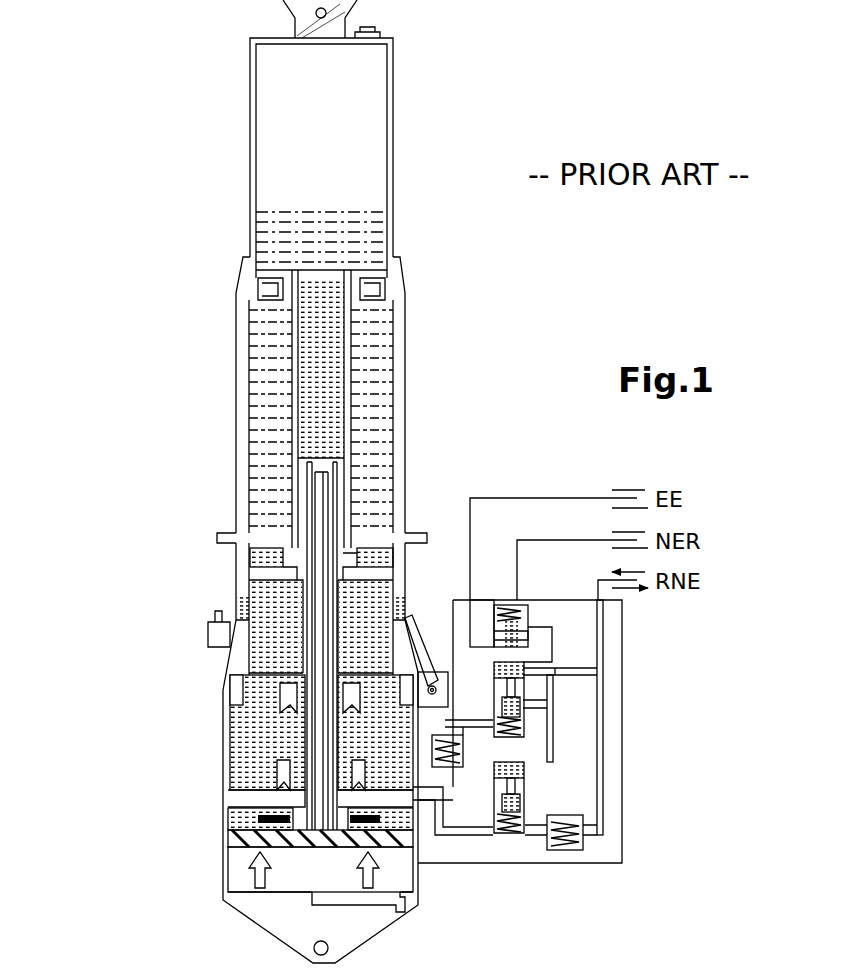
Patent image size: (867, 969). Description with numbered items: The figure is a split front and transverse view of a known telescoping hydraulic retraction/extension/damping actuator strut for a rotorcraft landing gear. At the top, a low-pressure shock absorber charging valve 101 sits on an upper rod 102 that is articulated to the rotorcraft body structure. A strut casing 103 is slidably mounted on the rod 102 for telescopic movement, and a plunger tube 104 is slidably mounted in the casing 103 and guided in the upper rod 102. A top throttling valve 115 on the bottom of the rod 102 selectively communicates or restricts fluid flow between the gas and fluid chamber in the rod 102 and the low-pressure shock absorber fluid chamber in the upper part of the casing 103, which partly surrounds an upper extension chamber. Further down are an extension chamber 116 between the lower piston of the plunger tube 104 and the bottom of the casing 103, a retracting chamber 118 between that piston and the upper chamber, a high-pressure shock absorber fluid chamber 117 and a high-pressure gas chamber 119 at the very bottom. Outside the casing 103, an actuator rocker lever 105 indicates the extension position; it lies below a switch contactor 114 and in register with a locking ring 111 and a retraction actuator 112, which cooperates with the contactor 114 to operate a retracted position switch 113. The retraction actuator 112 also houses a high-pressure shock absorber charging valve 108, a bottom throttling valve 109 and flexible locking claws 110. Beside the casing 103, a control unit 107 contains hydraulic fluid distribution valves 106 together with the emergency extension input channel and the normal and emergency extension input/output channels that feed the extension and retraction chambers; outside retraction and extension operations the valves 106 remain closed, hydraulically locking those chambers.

The low-pressure shock absorber charging valve 101 is at (367, 31).
The upper rod 102 is at (395, 133).
The strut casing 103 is at (400, 288).
The plunger tube 104 is at (350, 356).
The actuator rocker lever 105 is at (437, 672).
The hydraulic fluid distribution valves 106 is at (517, 698).
The control unit 107 is at (630, 750).
The high-pressure shock absorber charging valve 108 is at (406, 910).
The bottom throttling valve 109 is at (232, 815).
The flexible locking claws 110 is at (262, 770).
The locking ring 111 is at (285, 712).
The retraction actuator 112 is at (285, 712).
The retracted position switch 113 is at (215, 630).
The switch contactor 114 is at (226, 533).
The top throttling valve 115 is at (257, 295).
The extension chamber 116 is at (265, 672).
The high-pressure shock absorber fluid chamber 117 is at (243, 817).
The retracting chamber 118 is at (262, 568).
The high-pressure gas chamber 119 is at (240, 873).